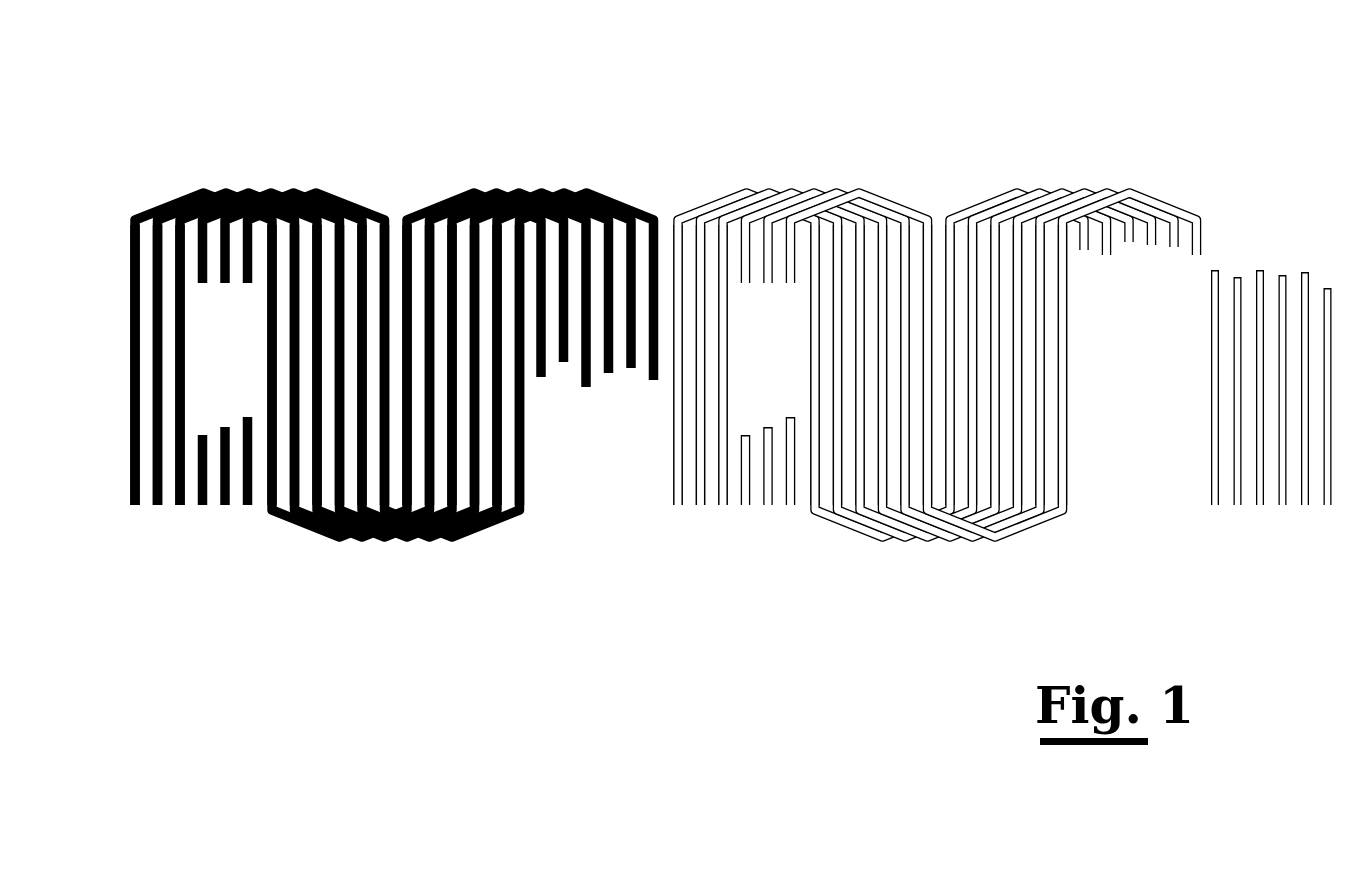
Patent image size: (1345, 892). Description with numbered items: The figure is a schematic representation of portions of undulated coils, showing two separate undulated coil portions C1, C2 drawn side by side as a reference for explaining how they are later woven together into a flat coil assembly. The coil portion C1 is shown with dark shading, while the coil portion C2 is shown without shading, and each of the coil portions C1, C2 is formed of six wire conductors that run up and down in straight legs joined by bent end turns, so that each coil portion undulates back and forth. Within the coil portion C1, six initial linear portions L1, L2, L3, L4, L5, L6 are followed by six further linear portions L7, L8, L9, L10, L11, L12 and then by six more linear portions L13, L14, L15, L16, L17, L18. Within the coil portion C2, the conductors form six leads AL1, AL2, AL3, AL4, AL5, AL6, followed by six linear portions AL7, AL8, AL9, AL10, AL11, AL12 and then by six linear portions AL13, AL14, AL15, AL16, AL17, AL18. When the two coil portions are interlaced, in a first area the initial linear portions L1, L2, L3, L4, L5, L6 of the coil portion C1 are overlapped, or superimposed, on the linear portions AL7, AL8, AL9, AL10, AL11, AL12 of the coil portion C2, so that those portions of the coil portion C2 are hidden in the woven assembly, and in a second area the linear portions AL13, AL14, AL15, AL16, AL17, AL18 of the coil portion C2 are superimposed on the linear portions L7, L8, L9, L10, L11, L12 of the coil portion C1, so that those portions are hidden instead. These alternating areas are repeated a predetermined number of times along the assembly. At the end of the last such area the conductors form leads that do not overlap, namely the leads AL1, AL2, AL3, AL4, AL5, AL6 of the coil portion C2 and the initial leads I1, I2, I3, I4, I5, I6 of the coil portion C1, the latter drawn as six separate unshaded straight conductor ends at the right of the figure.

The coil portion C1 is at (1157, 133).
The coil portion C2 is at (207, 140).
The initial linear portion L1 is at (678, 505).
The initial linear portion L2 is at (700, 505).
The initial linear portion L3 is at (723, 505).
The initial linear portion L4 is at (746, 505).
The initial linear portion L5 is at (768, 505).
The initial linear portion L6 is at (790, 505).
The linear portion L7 is at (815, 291).
The linear portion L8 is at (838, 308).
The linear portion L9 is at (860, 325).
The linear portion L10 is at (882, 347).
The linear portion L11 is at (905, 370).
The linear portion L12 is at (928, 393).
The leg of first coil L13 is at (950, 292).
The leg of first coil L14 is at (972, 313).
The leg of first coil L15 is at (995, 336).
The leg of first coil L16 is at (1018, 356).
The leg of first coil L17 is at (1040, 379).
The leg of first coil L18 is at (1062, 405).
The lead AL1 is at (135, 505).
The lead AL2 is at (158, 505).
The lead AL3 is at (180, 505).
The lead AL4 is at (202, 505).
The lead AL5 is at (225, 505).
The lead AL6 is at (248, 505).
The linear portion AL7 is at (272, 298).
The linear portion AL8 is at (294, 315).
The linear portion AL9 is at (317, 330).
The linear portion AL10 is at (340, 355).
The linear portion AL11 is at (362, 377).
The linear portion AL12 is at (385, 398).
The linear portion AL13 is at (407, 370).
The linear portion AL14 is at (430, 395).
The linear portion AL15 is at (452, 420).
The linear portion AL16 is at (474, 445).
The linear portion AL17 is at (497, 468).
The linear portion AL18 is at (520, 493).
The initial lead I1 is at (1215, 505).
The initial lead I2 is at (1238, 505).
The initial lead I3 is at (1260, 505).
The initial lead I4 is at (1282, 505).
The initial lead I5 is at (1305, 505).
The initial lead I6 is at (1328, 505).